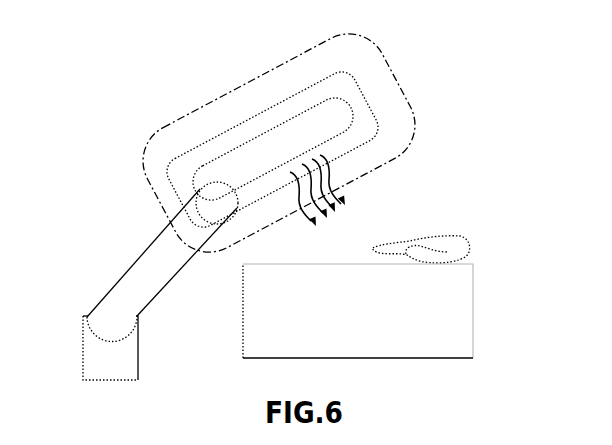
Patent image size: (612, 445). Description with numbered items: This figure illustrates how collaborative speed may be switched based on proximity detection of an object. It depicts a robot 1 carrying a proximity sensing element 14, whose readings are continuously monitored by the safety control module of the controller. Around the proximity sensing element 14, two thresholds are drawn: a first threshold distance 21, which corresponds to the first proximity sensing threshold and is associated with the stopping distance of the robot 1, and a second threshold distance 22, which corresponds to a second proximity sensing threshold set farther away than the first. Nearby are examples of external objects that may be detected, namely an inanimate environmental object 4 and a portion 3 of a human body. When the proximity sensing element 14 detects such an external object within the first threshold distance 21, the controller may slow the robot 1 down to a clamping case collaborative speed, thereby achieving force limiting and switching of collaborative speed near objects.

The robot 1 is at (162, 247).
The proximity sensing element 14 is at (267, 143).
The first threshold distance 21 is at (377, 128).
The second threshold distance 22 is at (390, 77).
The portion of a human body 3 is at (447, 225).
The inanimate environmental object 4 is at (475, 313).